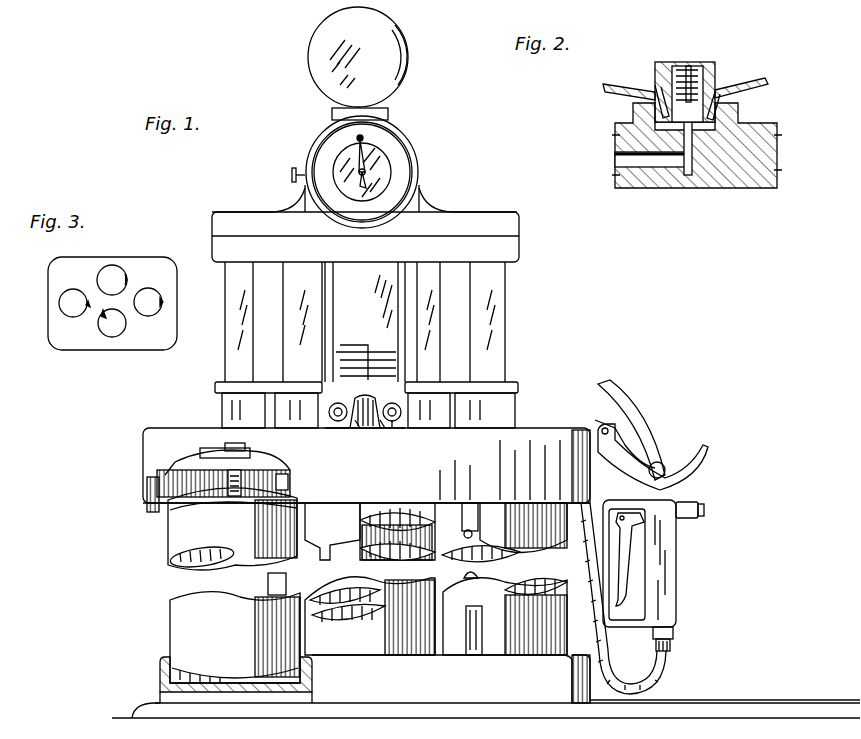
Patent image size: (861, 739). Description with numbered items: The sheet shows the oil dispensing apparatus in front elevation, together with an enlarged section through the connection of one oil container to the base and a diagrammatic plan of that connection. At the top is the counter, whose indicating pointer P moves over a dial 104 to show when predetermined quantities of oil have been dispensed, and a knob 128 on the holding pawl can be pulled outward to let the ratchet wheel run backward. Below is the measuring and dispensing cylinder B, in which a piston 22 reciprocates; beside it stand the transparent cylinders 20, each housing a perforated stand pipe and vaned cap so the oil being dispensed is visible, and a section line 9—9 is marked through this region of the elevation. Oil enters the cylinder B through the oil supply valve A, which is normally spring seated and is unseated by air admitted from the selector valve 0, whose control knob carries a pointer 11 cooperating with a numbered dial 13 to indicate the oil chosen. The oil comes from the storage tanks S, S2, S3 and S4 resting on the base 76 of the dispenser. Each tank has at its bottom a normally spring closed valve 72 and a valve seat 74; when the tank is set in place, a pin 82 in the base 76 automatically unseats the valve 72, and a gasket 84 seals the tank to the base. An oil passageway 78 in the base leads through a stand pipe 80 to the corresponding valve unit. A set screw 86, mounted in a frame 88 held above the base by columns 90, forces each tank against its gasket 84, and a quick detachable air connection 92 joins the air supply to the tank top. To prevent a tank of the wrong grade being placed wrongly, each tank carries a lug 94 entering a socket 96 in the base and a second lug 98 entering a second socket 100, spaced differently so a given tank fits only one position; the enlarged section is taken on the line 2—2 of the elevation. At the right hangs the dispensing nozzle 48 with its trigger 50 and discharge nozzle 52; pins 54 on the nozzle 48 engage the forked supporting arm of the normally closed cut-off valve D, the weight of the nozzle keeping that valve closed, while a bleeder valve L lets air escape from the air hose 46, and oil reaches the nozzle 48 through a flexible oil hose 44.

In FIG. 1, the indicating pointer P is at (366, 142).
In FIG. 1, the dial 104 is at (396, 161).
In FIG. 1, the knob 128 is at (290, 176).
In FIG. 1, the transparent cylinder 20 is at (290, 357).
In FIG. 1, the piston 22 is at (383, 352).
In FIG. 1, the measuring and dispensing cylinder B is at (361, 322).
In FIG. 1, the section line 9 is at (368, 453).
In FIG. 1, the oil supply valve A is at (398, 410).
In FIG. 1, the selector valve 0 is at (356, 425).
In FIG. 1, the pointer 11 is at (392, 422).
In FIG. 1, the numbered dial 13 is at (385, 425).
In FIG. 1, the frame 88 is at (268, 462).
In FIG. 1, the set screw 86 is at (230, 478).
In FIG. 1, the air connection 92 is at (290, 481).
In FIG. 1, the storage tank S is at (232, 529).
In FIG. 1, the storage tank S2 is at (370, 531).
In FIG. 1, the stand pipe 80 is at (325, 548).
In FIG. 1, the storage tank S3 is at (370, 608).
In FIG. 1, the storage tank S4 is at (504, 600).
In FIG. 1, the column 90 is at (474, 534).
In FIG. 1, the section line 2 is at (235, 648).
In FIG. 1, the socket 96 is at (312, 668).
In FIG. 3, the socket 96 is at (162, 302).
In FIG. 1, the base 76 is at (486, 686).
In FIG. 2, the base 76 is at (718, 180).
In FIG. 3, the base 76 is at (147, 257).
In FIG. 1, the dispensing nozzle 48 is at (668, 566).
In FIG. 1, the dispensing trigger 50 is at (627, 564).
In FIG. 1, the discharge nozzle 52 is at (635, 410).
In FIG. 1, the pin 54 is at (668, 463).
In FIG. 1, the cut-off valve D is at (702, 460).
In FIG. 1, the bleeder valve L is at (700, 507).
In FIG. 1, the oil hose 44 is at (680, 660).
In FIG. 1, the air hose 46 is at (673, 652).
In FIG. 2, the spring closed valve 72 is at (716, 90).
In FIG. 2, the valve seat 74 is at (748, 84).
In FIG. 2, the oil passageway 78 is at (615, 164).
In FIG. 2, the pin 82 is at (689, 178).
In FIG. 2, the gasket 84 is at (722, 110).
In FIG. 3, the second socket 100 is at (89, 296).
In FIG. 3, the second lug 98 is at (110, 302).
In FIG. 3, the lug 94 is at (186, 313).